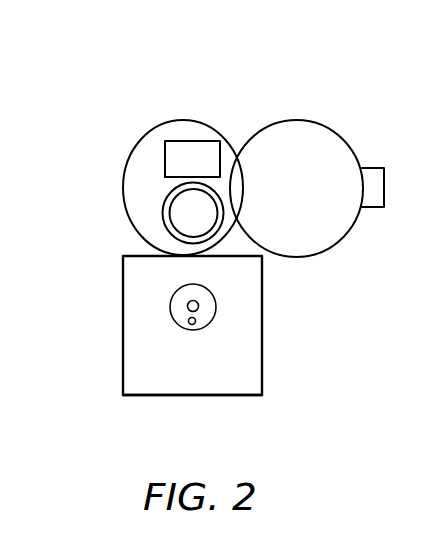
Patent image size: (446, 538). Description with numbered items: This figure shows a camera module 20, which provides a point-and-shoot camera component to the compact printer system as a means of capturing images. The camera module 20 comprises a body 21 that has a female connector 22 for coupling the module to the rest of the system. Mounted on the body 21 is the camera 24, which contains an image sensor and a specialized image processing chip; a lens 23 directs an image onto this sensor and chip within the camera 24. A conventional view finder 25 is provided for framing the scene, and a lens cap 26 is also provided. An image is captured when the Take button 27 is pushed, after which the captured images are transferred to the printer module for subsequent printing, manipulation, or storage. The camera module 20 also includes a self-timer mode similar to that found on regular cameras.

The camera module 20 is at (265, 90).
The body 21 is at (247, 376).
The female connector 22 is at (157, 394).
The lens 23 is at (183, 212).
The camera 24 is at (135, 160).
The view finder 25 is at (188, 150).
The lens cap 26 is at (321, 143).
The Take button 27 is at (197, 305).